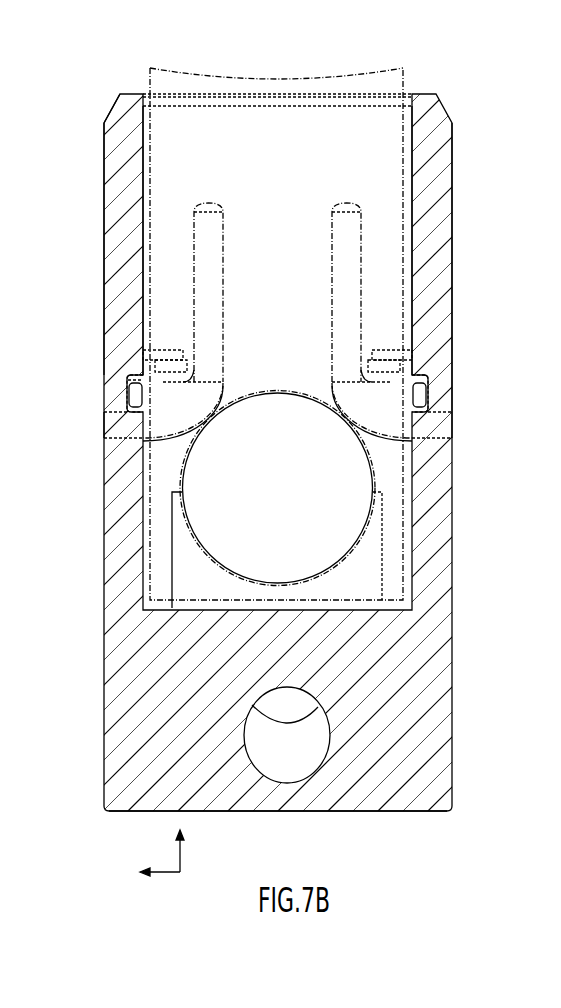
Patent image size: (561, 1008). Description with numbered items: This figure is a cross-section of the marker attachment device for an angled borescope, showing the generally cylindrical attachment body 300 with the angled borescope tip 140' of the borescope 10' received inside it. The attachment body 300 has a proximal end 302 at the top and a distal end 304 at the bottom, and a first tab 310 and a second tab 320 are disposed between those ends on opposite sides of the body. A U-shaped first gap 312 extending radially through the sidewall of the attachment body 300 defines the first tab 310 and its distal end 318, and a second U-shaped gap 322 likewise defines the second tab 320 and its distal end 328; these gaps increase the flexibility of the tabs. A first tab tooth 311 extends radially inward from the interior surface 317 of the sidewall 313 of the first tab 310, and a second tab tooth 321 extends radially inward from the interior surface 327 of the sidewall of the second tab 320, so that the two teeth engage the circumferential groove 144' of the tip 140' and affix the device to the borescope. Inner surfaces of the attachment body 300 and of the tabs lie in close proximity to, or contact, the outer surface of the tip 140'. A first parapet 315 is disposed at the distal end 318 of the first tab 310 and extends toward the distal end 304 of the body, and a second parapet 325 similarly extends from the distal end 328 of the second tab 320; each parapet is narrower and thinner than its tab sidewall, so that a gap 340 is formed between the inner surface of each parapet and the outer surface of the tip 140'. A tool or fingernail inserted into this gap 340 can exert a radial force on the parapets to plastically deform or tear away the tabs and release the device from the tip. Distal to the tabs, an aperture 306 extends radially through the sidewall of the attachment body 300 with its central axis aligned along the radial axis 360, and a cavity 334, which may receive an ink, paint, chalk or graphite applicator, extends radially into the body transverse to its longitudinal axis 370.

The borescope 10' is at (419, 40).
The borescope tip 140' is at (278, 319).
The circumferential groove 144' is at (351, 292).
The attachment body 300 is at (118, 690).
The proximal end 302 is at (412, 98).
The distal end 304 is at (398, 805).
The aperture 306 is at (347, 510).
The first tab 310 is at (105, 333).
The first tab tooth 311 is at (147, 358).
The U-shaped first gap 312 is at (113, 425).
The sidewall of the first tab 313 is at (120, 310).
The first parapet 315 is at (118, 403).
The interior surface of the first tab sidewall 317 is at (147, 289).
The distal end of the first tab 318 is at (145, 382).
The second tab 320 is at (415, 258).
The second tab tooth 321 is at (400, 357).
The second U-shaped gap 322 is at (440, 422).
The second parapet 325 is at (440, 382).
The interior surface of the second tab sidewall 327 is at (415, 293).
The distal end of the second tab 328 is at (450, 397).
The cavity 334 is at (302, 765).
The gap 340 is at (145, 407).
The radial axis 360 is at (172, 868).
The longitudinal axis 370 is at (183, 852).